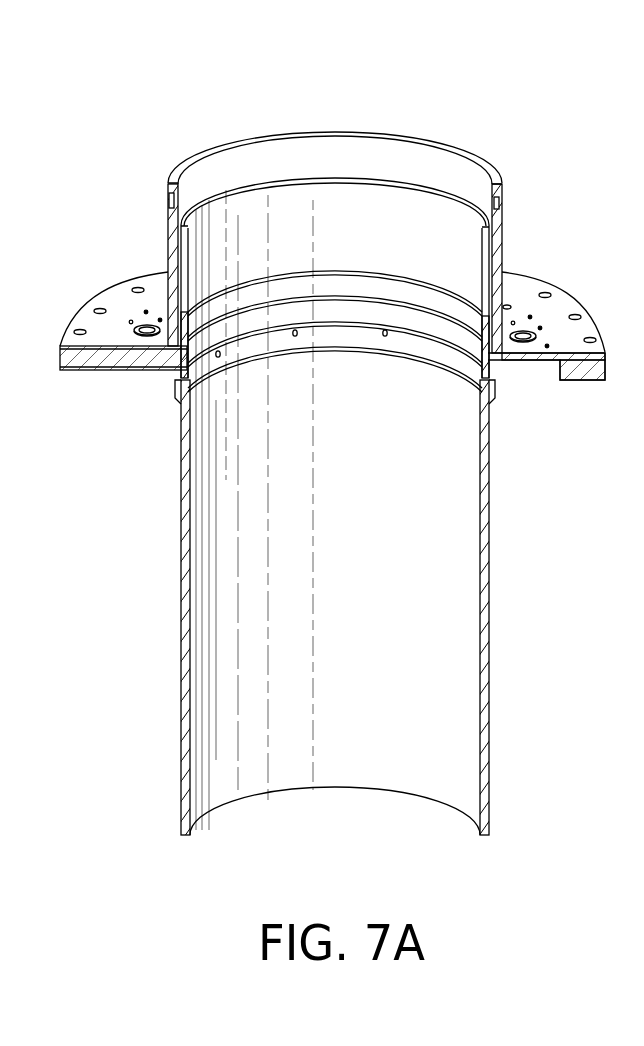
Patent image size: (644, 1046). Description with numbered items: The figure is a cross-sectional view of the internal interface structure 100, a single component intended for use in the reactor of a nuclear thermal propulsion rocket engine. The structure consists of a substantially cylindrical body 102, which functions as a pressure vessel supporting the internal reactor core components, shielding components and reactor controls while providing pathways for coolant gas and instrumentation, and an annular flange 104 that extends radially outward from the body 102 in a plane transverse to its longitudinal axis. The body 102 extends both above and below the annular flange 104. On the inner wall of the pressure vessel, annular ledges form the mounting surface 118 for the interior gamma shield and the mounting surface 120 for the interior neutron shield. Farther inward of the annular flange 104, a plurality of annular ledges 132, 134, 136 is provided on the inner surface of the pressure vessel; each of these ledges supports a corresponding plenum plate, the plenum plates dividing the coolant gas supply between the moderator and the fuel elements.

The internal interface structure 100 is at (513, 126).
The cylindrical body 102 is at (176, 661).
The annular flange 104 is at (600, 325).
The mounting surface 118 is at (313, 181).
The mounting surface 120 is at (433, 283).
The annular ledge 132 is at (336, 306).
The annular ledge 134 is at (412, 339).
The annular ledge 136 is at (293, 351).